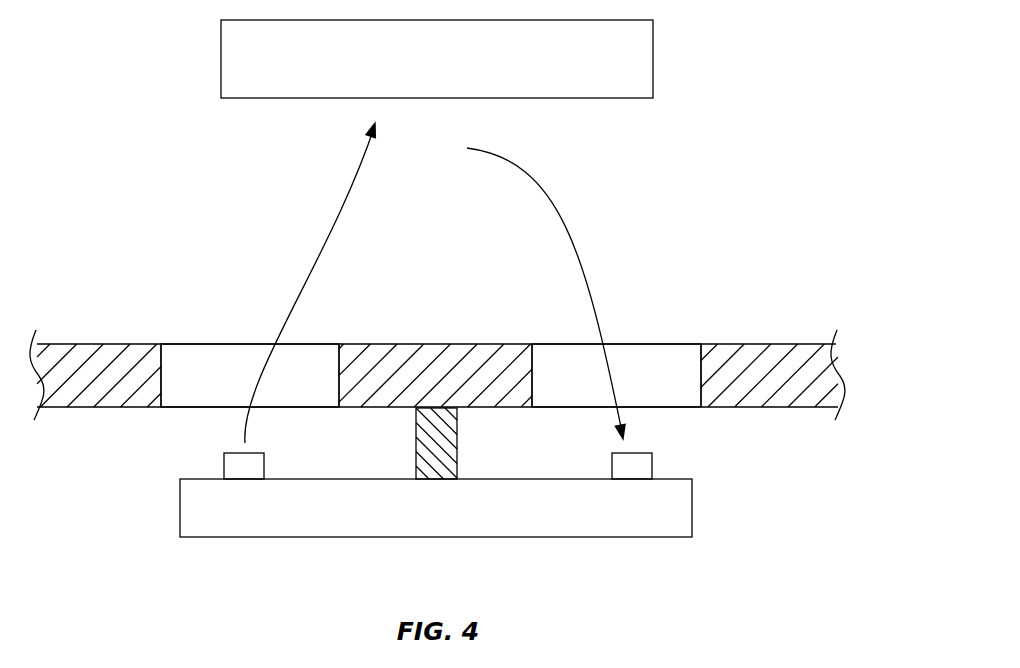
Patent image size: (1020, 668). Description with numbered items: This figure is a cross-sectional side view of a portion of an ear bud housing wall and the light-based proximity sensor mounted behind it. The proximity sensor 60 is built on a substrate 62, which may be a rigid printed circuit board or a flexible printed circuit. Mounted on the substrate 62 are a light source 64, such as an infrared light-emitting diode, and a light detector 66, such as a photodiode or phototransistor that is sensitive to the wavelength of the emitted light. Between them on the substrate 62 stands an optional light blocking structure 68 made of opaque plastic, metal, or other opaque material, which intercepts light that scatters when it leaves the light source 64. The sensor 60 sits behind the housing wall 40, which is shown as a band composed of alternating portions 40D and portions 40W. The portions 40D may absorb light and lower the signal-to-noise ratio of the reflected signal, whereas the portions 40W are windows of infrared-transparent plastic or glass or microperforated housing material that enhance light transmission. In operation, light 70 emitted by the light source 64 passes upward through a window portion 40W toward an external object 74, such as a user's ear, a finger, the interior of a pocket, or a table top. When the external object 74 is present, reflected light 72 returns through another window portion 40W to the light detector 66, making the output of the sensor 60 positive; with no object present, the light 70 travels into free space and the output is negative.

The housing wall 40 is at (875, 325).
The portions of housing wall 40D is at (107, 357).
The window portions of housing wall 40W is at (220, 357).
The light-based proximity sensor 60 is at (727, 450).
The substrate 62 is at (197, 510).
The light source 64 is at (224, 466).
The light detector 66 is at (612, 466).
The light blocking structure 68 is at (458, 434).
The light 70 is at (330, 244).
The reflected light 72 is at (566, 212).
The external object 74 is at (653, 55).